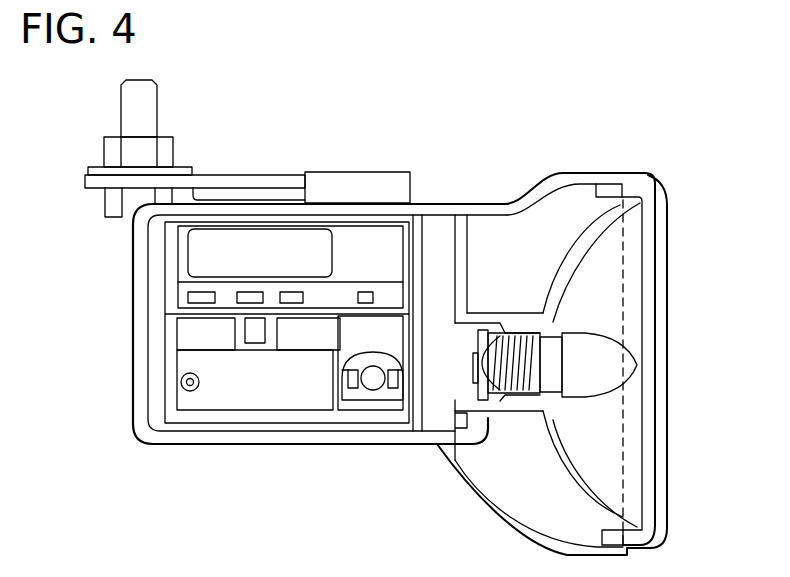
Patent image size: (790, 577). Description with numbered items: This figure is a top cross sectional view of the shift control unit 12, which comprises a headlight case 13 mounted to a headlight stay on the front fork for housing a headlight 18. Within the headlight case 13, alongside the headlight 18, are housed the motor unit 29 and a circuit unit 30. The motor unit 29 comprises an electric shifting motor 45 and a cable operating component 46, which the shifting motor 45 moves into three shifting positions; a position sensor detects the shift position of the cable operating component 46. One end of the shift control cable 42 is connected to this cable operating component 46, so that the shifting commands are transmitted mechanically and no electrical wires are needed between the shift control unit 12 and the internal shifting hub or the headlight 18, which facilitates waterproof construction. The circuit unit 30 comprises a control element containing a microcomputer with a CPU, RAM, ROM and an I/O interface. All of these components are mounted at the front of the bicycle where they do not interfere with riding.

The shift control unit 12 is at (433, 153).
The headlight case 13 is at (455, 190).
The headlight 18 is at (587, 350).
The motor unit 29 is at (288, 427).
The circuit unit 30 is at (274, 247).
The shift control cable 42 is at (142, 117).
The electric shifting motor 45 is at (350, 398).
The cable operating component 46 is at (238, 395).